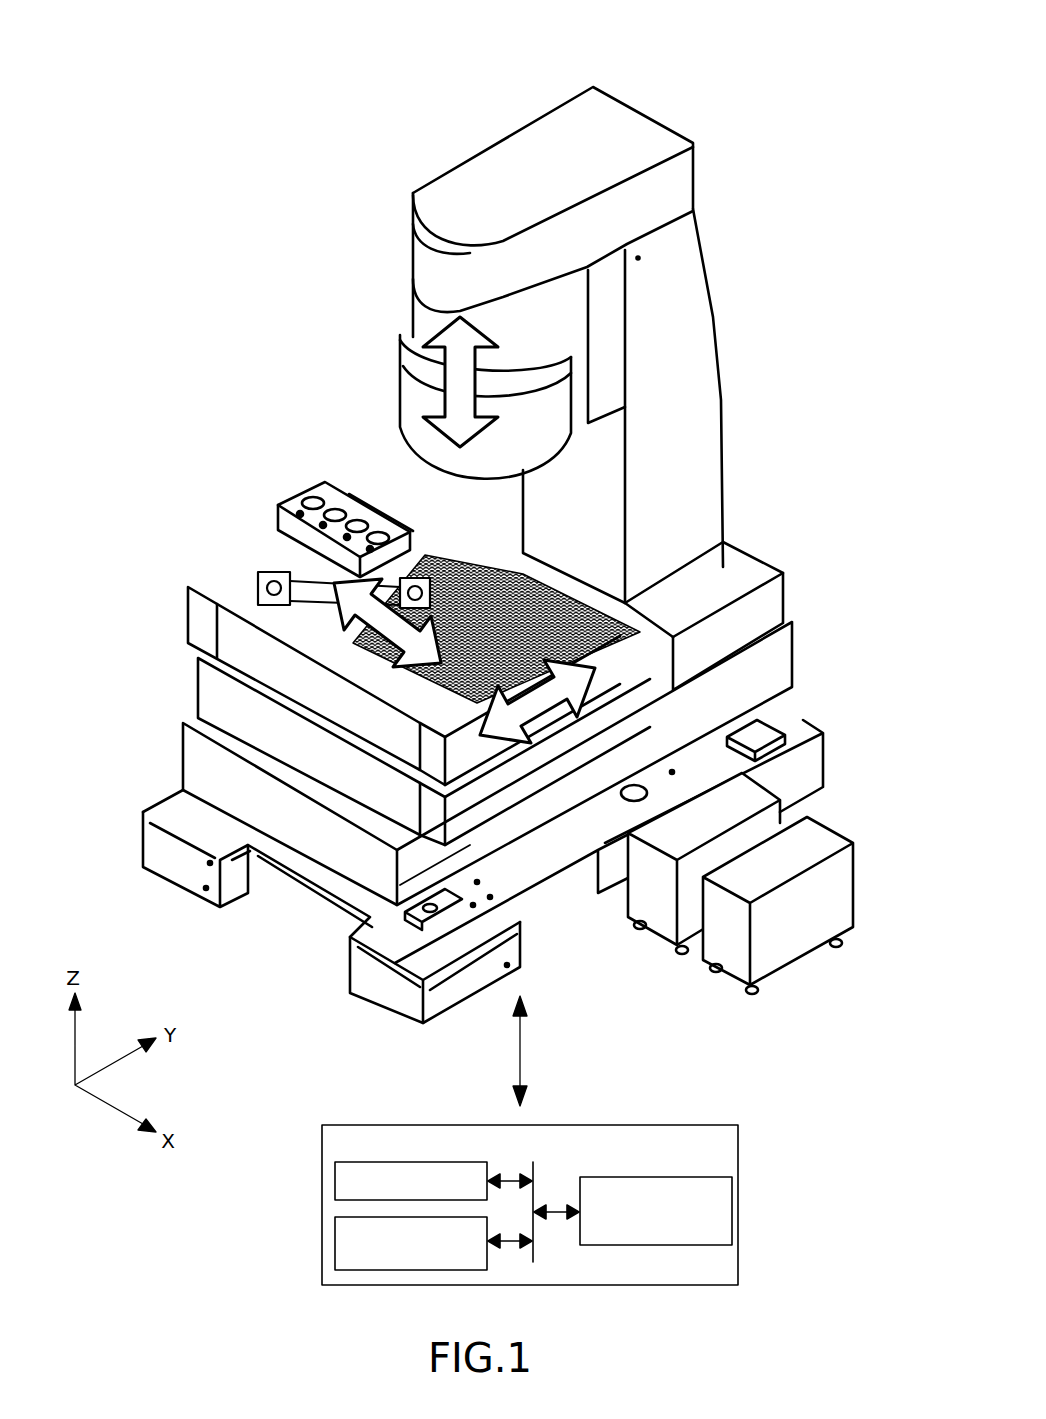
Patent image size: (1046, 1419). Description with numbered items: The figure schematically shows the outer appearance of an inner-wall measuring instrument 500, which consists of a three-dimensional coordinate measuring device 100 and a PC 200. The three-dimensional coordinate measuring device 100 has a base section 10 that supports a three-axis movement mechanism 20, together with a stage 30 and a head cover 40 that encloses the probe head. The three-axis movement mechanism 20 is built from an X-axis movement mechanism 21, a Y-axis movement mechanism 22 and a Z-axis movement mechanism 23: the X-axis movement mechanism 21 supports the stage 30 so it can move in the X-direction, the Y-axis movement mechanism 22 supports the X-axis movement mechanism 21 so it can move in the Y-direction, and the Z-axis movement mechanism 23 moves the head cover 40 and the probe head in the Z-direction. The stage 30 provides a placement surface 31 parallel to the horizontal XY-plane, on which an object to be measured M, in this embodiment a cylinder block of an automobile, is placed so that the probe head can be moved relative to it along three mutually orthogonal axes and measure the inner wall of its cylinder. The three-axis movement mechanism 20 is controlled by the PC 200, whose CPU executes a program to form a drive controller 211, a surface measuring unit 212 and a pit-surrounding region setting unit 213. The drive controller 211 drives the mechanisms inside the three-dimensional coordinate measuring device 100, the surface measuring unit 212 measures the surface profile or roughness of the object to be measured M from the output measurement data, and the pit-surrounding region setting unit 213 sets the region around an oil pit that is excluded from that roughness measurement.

The inner-wall measuring instrument 500 is at (496, 94).
The three-dimensional coordinate measuring device 100 is at (623, 122).
The Z-axis movement mechanism 23 is at (607, 328).
The head cover 40 is at (410, 394).
The object to be measured M is at (280, 522).
The X-axis movement mechanism 21 is at (214, 583).
The three-axis movement mechanism 20 is at (746, 566).
The stage 30 is at (263, 603).
The placement surface 31 is at (292, 613).
The Y-axis movement mechanism 22 is at (628, 678).
The base section 10 is at (303, 903).
The PC 200 is at (529, 1165).
The drive controller 211 is at (335, 1179).
The surface measuring unit 212 is at (335, 1241).
The pit-surrounding region setting unit 213 is at (732, 1213).